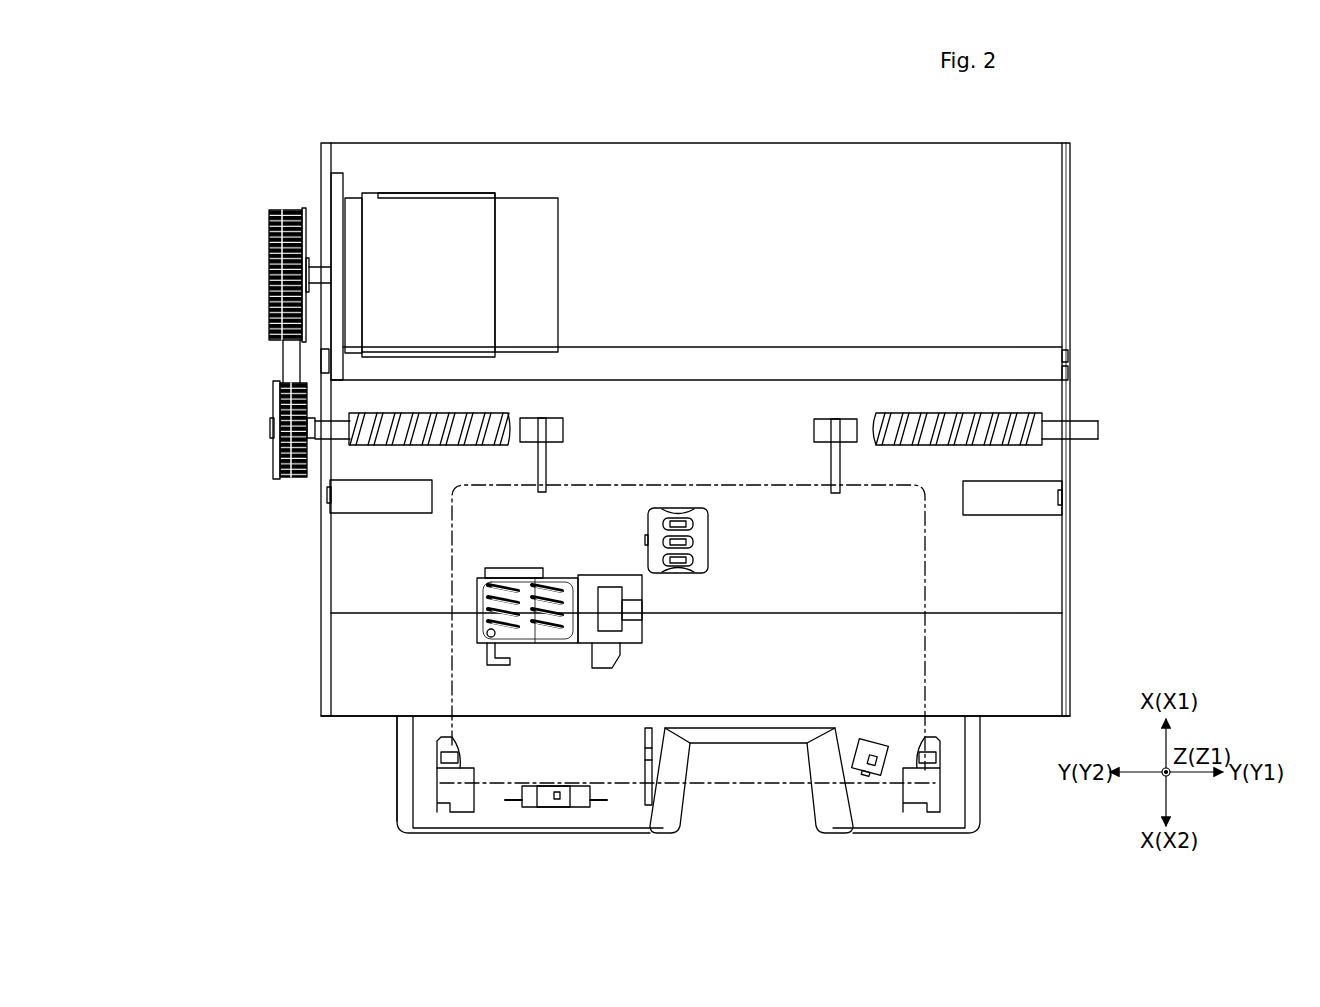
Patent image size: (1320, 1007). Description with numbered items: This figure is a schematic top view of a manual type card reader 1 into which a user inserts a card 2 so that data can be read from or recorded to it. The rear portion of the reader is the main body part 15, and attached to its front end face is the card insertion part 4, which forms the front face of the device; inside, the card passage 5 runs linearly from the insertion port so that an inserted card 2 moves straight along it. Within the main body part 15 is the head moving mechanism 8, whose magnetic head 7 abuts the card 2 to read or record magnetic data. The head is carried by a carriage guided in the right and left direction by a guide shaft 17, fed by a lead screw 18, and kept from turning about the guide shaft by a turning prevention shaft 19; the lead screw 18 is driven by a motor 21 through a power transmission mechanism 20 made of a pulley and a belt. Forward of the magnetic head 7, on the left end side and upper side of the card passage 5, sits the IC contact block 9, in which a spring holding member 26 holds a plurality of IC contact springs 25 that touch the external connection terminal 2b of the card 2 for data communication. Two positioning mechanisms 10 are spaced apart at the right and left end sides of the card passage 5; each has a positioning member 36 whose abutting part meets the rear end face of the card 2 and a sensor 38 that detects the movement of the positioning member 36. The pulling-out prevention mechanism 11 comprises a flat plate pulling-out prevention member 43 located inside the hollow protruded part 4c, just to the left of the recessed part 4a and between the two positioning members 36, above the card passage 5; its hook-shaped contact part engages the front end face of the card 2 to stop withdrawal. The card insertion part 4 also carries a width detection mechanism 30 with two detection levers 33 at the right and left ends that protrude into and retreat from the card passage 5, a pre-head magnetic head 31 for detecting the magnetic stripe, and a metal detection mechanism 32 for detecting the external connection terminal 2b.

The card reader 1 is at (1130, 176).
The card 2 is at (926, 566).
The external connection terminal 2b is at (535, 580).
The card insertion part 4 is at (983, 746).
The recessed part 4a is at (668, 808).
The protruded part 4c is at (397, 735).
The card passage 5 is at (852, 577).
The magnetic head 7 is at (712, 541).
The head moving mechanism 8 is at (282, 505).
The IC contact block 9 is at (510, 567).
The positioning mechanism 10 is at (578, 402).
The pulling-out prevention mechanism 11 is at (664, 710).
The main body part 15 is at (1072, 274).
The guide shaft 17 is at (376, 515).
The lead screw 18 is at (975, 412).
The turning prevention shaft 19 is at (920, 347).
The power transmission mechanism 20 is at (258, 351).
The motor 21 is at (558, 273).
The IC contact springs 25 is at (488, 619).
The spring holding member 26 is at (559, 618).
The width detection mechanism 30 is at (428, 818).
The magnetic head (pre-head) 31 is at (873, 742).
The metal detection mechanism 32 is at (530, 786).
The detection levers 33 is at (437, 790).
The positioning member 36 is at (548, 468).
The sensor 38 is at (565, 432).
The pulling-out prevention member 43 is at (644, 738).